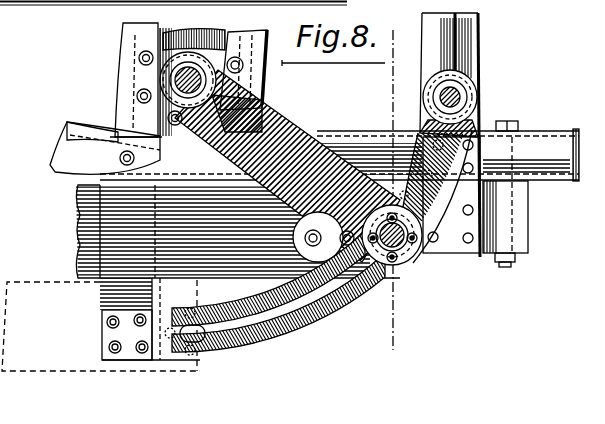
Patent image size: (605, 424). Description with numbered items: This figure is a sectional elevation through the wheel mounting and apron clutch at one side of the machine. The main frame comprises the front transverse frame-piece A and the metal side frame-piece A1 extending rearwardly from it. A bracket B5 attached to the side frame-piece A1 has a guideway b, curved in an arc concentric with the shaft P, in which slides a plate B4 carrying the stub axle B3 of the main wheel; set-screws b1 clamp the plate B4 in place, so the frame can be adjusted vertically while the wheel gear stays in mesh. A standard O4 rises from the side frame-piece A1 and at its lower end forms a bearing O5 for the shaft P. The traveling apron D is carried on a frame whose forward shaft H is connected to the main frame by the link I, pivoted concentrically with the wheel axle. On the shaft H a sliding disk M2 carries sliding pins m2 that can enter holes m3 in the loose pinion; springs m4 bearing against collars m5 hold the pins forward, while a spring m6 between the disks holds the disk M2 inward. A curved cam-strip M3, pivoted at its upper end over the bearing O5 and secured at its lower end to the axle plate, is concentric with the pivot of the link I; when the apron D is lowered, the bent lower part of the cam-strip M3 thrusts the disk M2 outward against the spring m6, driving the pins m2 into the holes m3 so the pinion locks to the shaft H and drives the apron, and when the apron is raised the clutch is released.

The forward link I is at (313, 132).
The side frame-piece A1 is at (67, 132).
The transverse frame-piece A is at (399, 212).
The traveling apron D is at (302, 212).
The stub axle B3 is at (182, 80).
The axle plate B4 is at (302, 212).
The bracket B5 is at (77, 55).
The guideway b is at (248, 18).
The set-screw b1 is at (270, 53).
The standard O4 is at (468, 42).
The bearing O5 is at (480, 72).
The shaft P is at (468, 97).
The sliding disk M2 is at (420, 272).
The cam-strip M3 is at (320, 352).
The forward shaft H is at (405, 262).
The sliding pin m2 is at (363, 214).
The hole m3 is at (416, 184).
The spring m4 is at (398, 266).
The collar m5 is at (418, 257).
The spring m6 is at (386, 268).